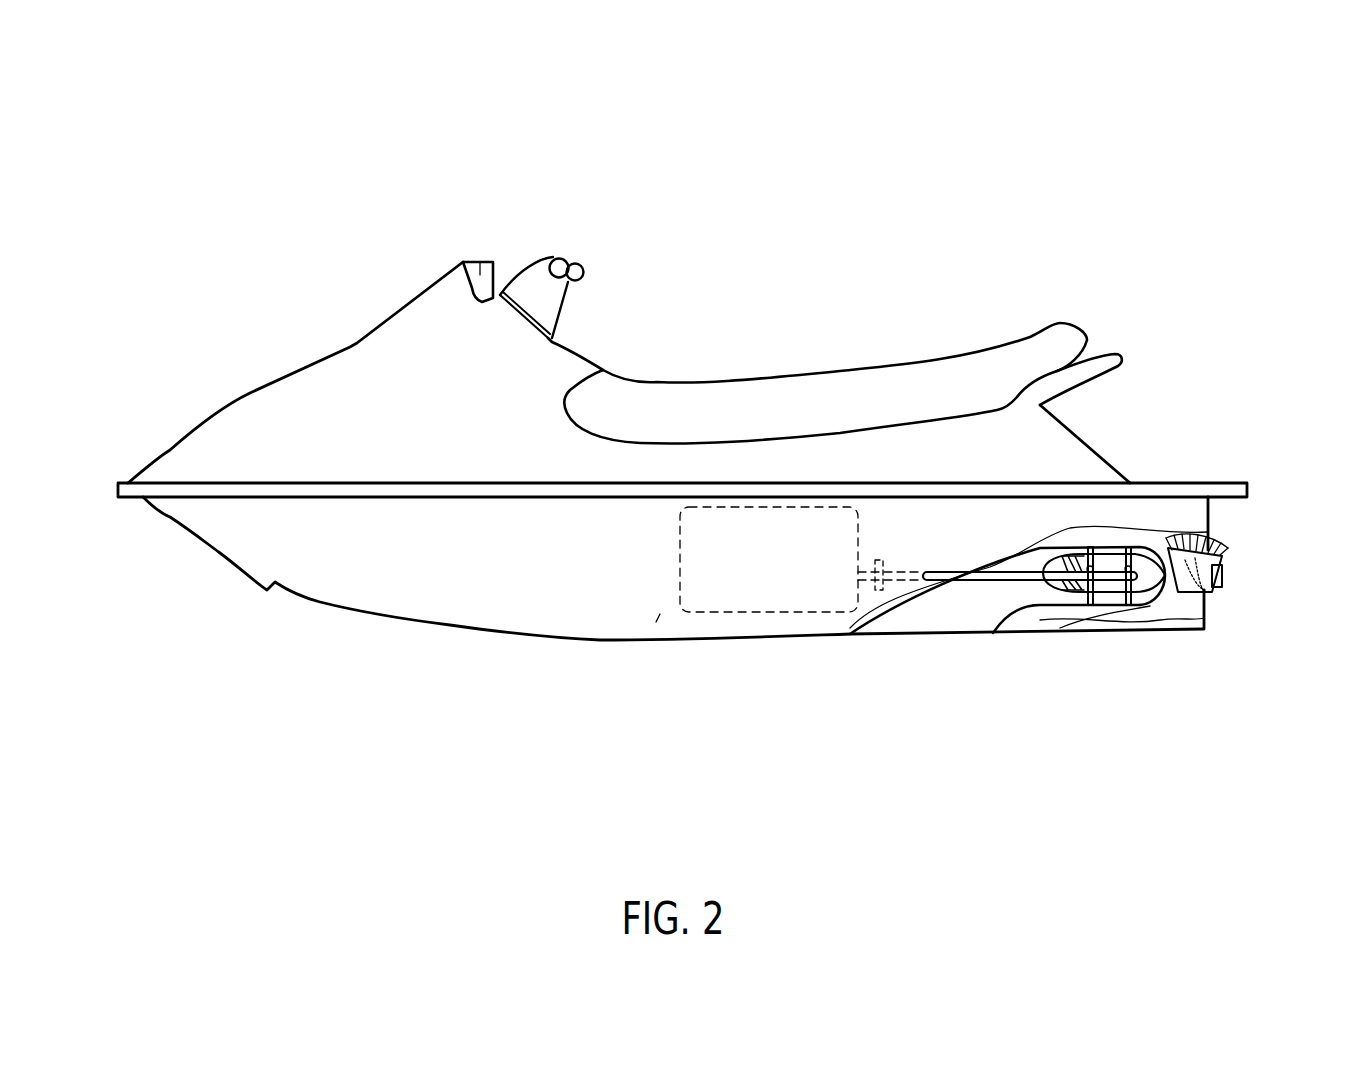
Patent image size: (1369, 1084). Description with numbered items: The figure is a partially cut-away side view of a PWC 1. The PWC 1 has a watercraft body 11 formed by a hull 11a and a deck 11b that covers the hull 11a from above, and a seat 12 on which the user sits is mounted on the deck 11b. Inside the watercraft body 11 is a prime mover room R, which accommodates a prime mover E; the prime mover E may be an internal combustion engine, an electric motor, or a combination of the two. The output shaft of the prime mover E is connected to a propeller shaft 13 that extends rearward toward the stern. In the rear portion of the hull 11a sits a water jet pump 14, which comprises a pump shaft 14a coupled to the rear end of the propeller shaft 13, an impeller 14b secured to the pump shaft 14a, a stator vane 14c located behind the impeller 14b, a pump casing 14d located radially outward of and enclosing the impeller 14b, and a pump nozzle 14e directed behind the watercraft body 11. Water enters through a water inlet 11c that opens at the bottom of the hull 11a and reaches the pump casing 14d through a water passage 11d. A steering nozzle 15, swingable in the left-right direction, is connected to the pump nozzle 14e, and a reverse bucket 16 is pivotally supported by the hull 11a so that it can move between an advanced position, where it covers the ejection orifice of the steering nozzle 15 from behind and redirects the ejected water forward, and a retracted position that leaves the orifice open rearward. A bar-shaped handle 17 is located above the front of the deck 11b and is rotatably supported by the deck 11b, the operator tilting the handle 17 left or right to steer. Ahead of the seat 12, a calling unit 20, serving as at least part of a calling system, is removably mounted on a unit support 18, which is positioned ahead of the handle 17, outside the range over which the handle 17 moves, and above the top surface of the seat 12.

The PWC 1 is at (325, 208).
The watercraft body 11 is at (623, 533).
The hull 11a is at (165, 517).
The deck 11b is at (172, 453).
The water inlet 11c is at (973, 633).
The water passage 11d is at (1013, 633).
The seat 12 is at (817, 373).
The propeller shaft 13 is at (918, 583).
The water jet pump 14 is at (1055, 675).
The pump shaft 14a is at (1055, 610).
The impeller 14b is at (1070, 607).
The stator vane 14c is at (1108, 597).
The pump casing 14d is at (1133, 623).
The pump nozzle 14e is at (1165, 597).
The steering nozzle 15 is at (1216, 588).
The reverse bucket 16 is at (1210, 552).
The handle 17 is at (578, 262).
The unit support 18 is at (462, 280).
The calling unit 20 is at (479, 262).
The prime mover E is at (730, 612).
The prime mover room R is at (657, 622).